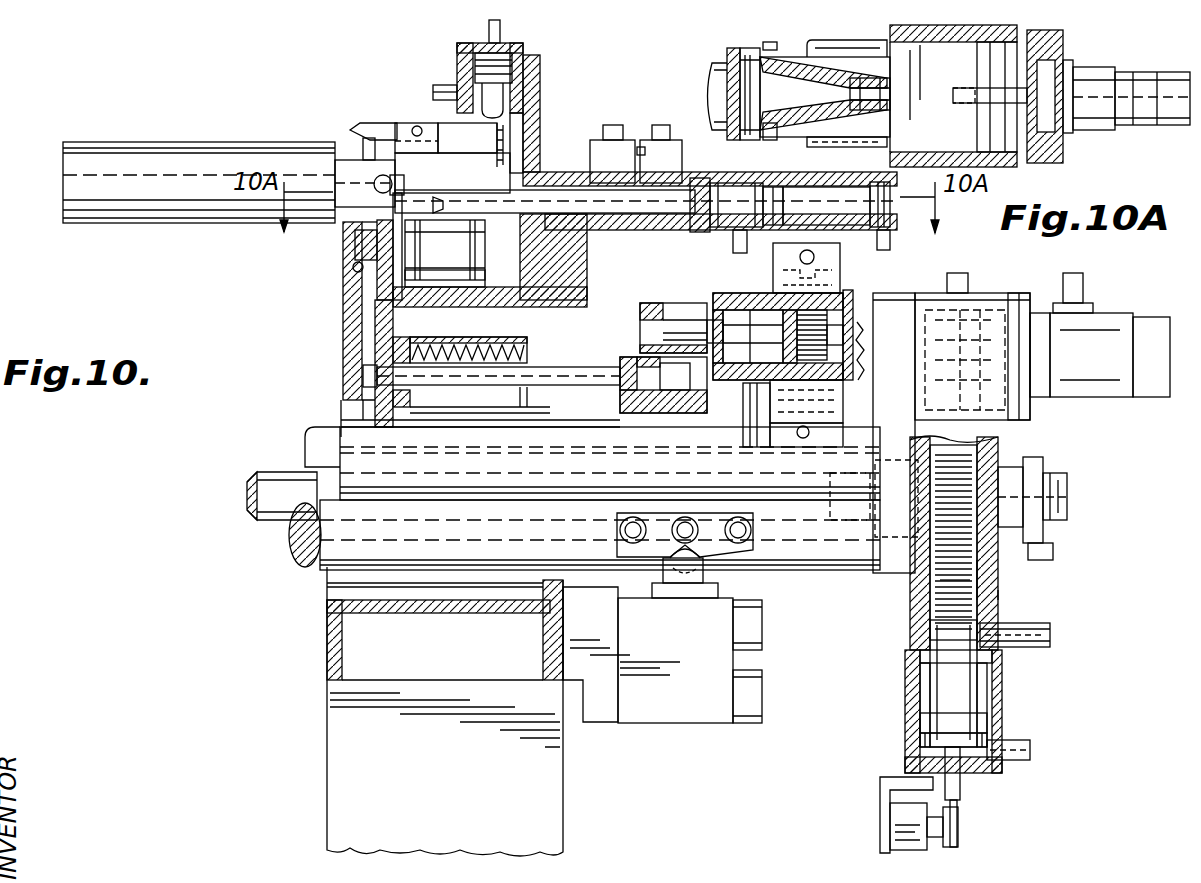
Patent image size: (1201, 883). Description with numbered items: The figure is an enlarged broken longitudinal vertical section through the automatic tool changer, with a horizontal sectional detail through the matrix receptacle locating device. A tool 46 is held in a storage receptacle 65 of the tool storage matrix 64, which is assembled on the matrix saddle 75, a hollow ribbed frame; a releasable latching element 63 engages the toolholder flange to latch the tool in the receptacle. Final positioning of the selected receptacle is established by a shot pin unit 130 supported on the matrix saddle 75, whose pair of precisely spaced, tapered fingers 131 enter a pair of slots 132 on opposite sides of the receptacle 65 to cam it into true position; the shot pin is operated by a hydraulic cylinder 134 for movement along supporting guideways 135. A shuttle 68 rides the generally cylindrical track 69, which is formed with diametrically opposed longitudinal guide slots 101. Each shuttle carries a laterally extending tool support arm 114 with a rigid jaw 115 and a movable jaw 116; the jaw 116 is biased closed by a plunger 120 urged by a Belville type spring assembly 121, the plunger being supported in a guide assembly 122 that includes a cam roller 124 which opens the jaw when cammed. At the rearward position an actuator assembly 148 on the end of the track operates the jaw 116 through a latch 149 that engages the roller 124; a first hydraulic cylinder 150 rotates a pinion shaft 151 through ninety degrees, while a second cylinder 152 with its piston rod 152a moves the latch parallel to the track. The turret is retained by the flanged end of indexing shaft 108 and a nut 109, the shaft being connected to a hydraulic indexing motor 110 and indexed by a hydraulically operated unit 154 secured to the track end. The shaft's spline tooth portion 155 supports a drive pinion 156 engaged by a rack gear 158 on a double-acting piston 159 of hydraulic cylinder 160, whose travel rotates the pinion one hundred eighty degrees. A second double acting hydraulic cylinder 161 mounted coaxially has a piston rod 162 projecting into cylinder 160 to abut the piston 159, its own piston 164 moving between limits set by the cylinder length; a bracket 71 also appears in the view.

In FIG. 10, the tool 46 is at (196, 138).
In FIG. 10A, the tool 46 is at (710, 88).
In FIG. 10, the releasable latching element 63 is at (385, 104).
In FIG. 10, the tool storage matrix 64 is at (330, 645).
In FIG. 10, the storage receptacle 65 is at (410, 118).
In FIG. 10A, the storage receptacle 65 is at (787, 137).
In FIG. 10, the shuttle 68 is at (340, 274).
In FIG. 10, the cylindrical track 69 is at (312, 456).
In FIG. 10, the bracket 71 is at (862, 335).
In FIG. 10, the matrix saddle 75 is at (438, 305).
In FIG. 10, the longitudinal guide slot 101 is at (325, 492).
In FIG. 10, the indexing shaft 108 is at (248, 512).
In FIG. 10, the nut 109 is at (870, 572).
In FIG. 10, the indexing motor 110 is at (998, 590).
In FIG. 10, the tool support arm 114 is at (390, 326).
In FIG. 10, the tool gripping jaw 115 is at (400, 240).
In FIG. 10, the tool gripping jaw 116 is at (340, 228).
In FIG. 10, the plunger 120 is at (572, 368).
In FIG. 10, the Belville type spring assembly 121 is at (478, 345).
In FIG. 10, the guide assembly 122 is at (631, 362).
In FIG. 10, the cam roller 124 is at (690, 377).
In FIG. 10, the shot pin unit 130 is at (585, 278).
In FIG. 10A, the shot pin unit 130 is at (1060, 37).
In FIG. 10, the fingers 131 is at (532, 197).
In FIG. 10A, the fingers 131 is at (836, 32).
In FIG. 10, the slots 132 is at (440, 176).
In FIG. 10A, the slots 132 is at (763, 50).
In FIG. 10A, the hydraulic cylinder 134 is at (1140, 133).
In FIG. 10, the supporting guideways 135 is at (620, 232).
In FIG. 10A, the supporting guideways 135 is at (950, 43).
In FIG. 10, the actuator assembly 148 is at (842, 275).
In FIG. 10, the latch 149 is at (640, 312).
In FIG. 10, the first hydraulic cylinder 150 is at (880, 243).
In FIG. 10, the pinion shaft 151 is at (742, 325).
In FIG. 10, the second cylinder 152 is at (722, 300).
In FIG. 10, the piston rod 152a is at (690, 305).
In FIG. 10, the hydraulically operated unit 154 is at (1003, 667).
In FIG. 10, the spline tooth portion 155 is at (923, 480).
In FIG. 10, the drive pinion 156 is at (977, 458).
In FIG. 10, the rack gear 158 is at (942, 580).
In FIG. 10, the double-acting piston 159 is at (988, 573).
In FIG. 10, the hydraulic cylinder 160 is at (997, 608).
In FIG. 10, the second double acting hydraulic cylinder 161 is at (1000, 713).
In FIG. 10, the piston rod 162 is at (940, 673).
In FIG. 10, the piston 164 is at (920, 723).